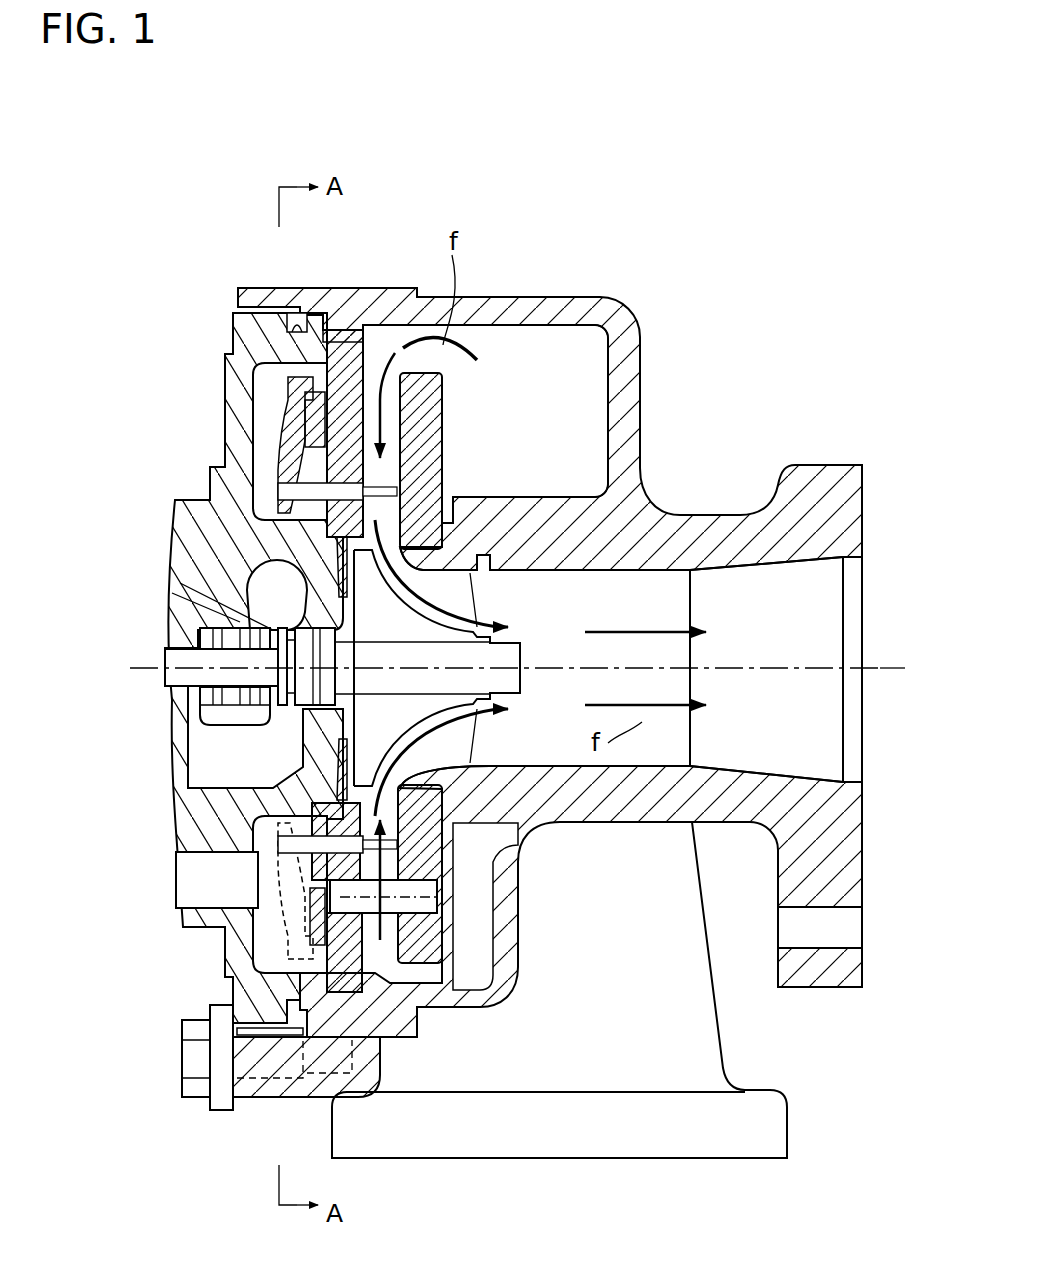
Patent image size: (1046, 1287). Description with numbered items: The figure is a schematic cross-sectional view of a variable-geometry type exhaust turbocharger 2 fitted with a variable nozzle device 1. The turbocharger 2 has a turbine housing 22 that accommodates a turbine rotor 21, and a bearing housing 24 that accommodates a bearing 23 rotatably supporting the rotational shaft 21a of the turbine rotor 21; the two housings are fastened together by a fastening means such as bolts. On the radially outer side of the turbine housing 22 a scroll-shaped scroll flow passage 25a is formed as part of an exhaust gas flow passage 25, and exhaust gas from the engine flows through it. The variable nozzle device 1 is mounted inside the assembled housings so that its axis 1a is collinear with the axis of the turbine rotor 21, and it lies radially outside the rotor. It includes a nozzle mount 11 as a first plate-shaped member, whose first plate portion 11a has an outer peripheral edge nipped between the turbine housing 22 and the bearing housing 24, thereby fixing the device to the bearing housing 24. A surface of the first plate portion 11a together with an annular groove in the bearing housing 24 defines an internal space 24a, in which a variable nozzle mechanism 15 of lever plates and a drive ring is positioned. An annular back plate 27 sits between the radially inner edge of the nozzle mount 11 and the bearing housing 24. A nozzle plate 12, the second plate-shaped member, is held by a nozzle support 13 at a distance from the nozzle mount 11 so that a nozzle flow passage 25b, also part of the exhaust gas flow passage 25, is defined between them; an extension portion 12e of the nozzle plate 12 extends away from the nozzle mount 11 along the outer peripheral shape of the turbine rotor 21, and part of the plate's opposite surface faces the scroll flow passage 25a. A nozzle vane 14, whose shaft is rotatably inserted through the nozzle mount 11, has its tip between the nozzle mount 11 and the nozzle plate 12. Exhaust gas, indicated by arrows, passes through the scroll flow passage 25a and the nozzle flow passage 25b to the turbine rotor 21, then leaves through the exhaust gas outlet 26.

The variable nozzle device 1 is at (268, 413).
The axis 1a is at (895, 668).
The variable-geometry type exhaust turbocharger 2 is at (187, 243).
The nozzle mount 11 is at (348, 265).
The first plate portion 11a is at (365, 375).
The nozzle plate 12 is at (443, 393).
The extension portion 12e is at (480, 813).
The nozzle support 13 is at (480, 935).
The nozzle vane 14 is at (383, 477).
The variable nozzle mechanism 15 is at (278, 443).
The turbine rotor 21 is at (478, 590).
The rotational shaft 21a is at (173, 697).
The turbine housing 22 is at (642, 438).
The bearing 23 is at (232, 622).
The bearing housing 24 is at (180, 538).
The internal space 24a is at (263, 498).
The exhaust gas flow passage 25 is at (613, 411).
The scroll flow passage 25a is at (580, 368).
The nozzle flow passage 25b is at (400, 418).
The exhaust gas outlet 26 is at (823, 587).
The back plate 27 is at (327, 752).